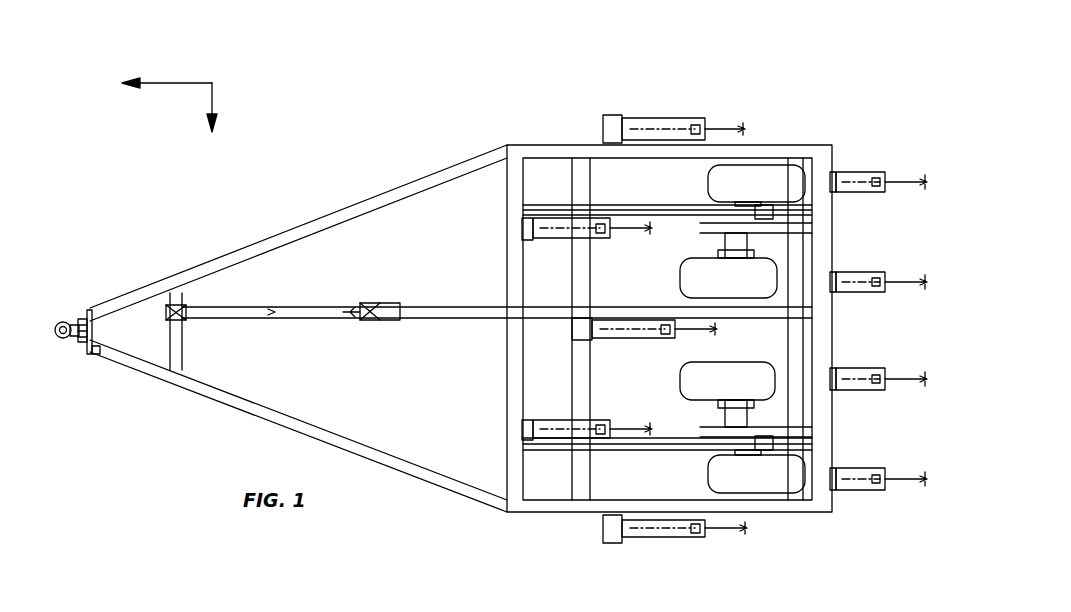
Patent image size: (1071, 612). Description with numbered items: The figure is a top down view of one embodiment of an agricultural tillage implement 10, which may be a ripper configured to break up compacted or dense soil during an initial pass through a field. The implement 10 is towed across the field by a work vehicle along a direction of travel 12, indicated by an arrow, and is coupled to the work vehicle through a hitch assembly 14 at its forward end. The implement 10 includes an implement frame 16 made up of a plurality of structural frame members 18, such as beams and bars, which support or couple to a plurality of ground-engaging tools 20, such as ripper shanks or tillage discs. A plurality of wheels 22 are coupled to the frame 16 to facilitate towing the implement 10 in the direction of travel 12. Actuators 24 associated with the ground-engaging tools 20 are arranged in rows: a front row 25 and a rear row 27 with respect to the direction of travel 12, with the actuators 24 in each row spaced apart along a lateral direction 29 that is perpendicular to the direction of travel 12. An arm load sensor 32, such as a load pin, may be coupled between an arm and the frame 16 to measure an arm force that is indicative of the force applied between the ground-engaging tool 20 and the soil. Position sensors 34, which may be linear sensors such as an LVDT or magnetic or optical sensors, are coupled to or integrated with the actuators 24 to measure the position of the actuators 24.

The tillage implement 10 is at (349, 58).
The direction of travel 12 is at (168, 83).
The hitch assembly 14 is at (62, 320).
The implement frame 16 is at (268, 235).
The structural frame members 18 is at (503, 273).
The ground-engaging tools 20 is at (740, 125).
The wheels 22 is at (745, 165).
The actuators 24 is at (645, 118).
The front row 25 is at (740, 125).
The rear row 27 is at (920, 190).
The lateral direction 29 is at (212, 95).
The arm load sensor 32 is at (512, 232).
The position sensors 34 is at (598, 130).